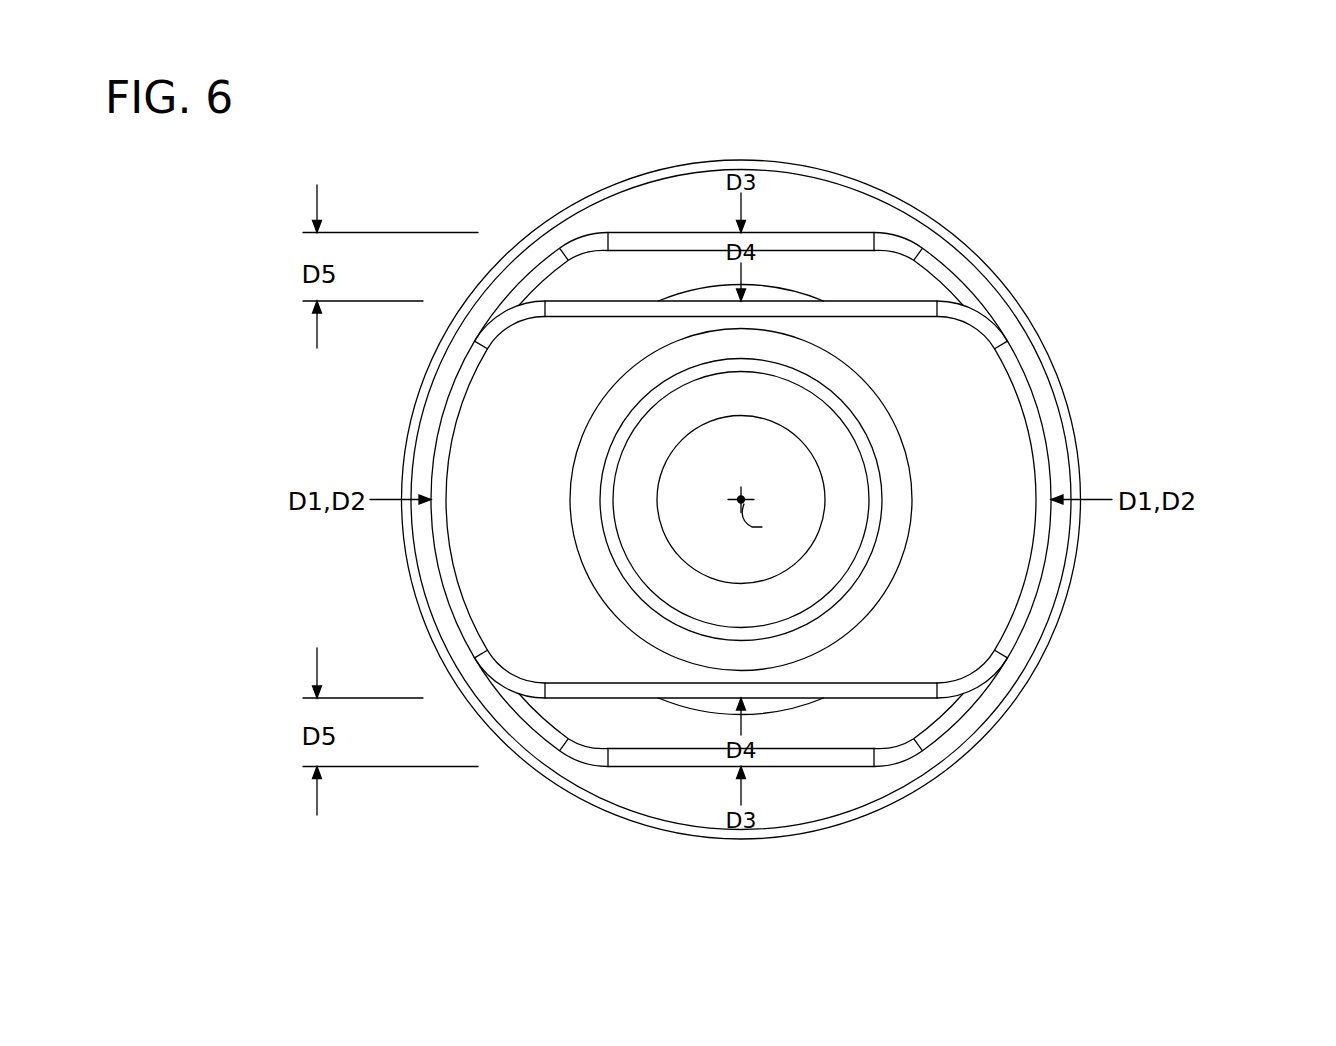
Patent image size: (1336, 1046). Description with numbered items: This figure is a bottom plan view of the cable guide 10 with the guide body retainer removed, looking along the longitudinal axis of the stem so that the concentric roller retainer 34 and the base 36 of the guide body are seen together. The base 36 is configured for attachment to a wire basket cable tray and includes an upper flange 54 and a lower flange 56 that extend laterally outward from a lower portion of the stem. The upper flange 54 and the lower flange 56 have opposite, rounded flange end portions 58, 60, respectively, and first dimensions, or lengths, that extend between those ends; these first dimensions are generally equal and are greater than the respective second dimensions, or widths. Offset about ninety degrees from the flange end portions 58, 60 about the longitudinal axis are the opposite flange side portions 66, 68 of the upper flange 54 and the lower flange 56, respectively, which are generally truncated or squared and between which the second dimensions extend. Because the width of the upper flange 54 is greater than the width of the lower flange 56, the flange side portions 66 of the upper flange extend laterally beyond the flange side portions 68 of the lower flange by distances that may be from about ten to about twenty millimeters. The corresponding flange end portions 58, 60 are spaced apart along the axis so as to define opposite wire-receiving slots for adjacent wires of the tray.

The cable guide 10 is at (1207, 136).
The roller retainer 34 is at (836, 172).
The base 36 is at (822, 790).
The upper flange 54 is at (947, 243).
The lower flange 56 is at (1005, 331).
The flange end portions 58 is at (530, 285).
The flange end portions 60 is at (1042, 433).
The flange side portions 66 is at (652, 242).
The flange side portions 68 is at (838, 312).